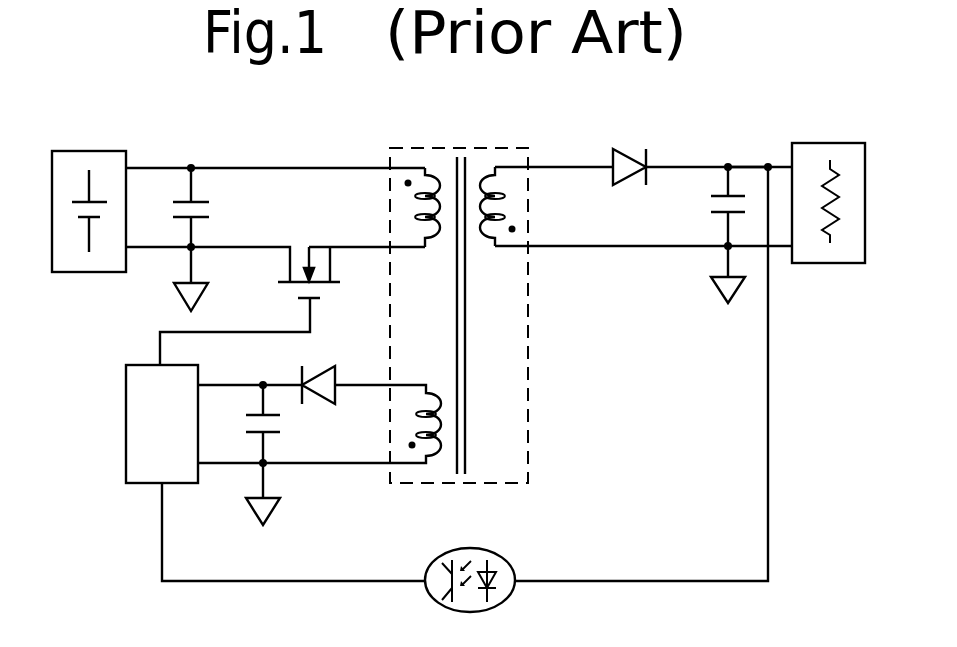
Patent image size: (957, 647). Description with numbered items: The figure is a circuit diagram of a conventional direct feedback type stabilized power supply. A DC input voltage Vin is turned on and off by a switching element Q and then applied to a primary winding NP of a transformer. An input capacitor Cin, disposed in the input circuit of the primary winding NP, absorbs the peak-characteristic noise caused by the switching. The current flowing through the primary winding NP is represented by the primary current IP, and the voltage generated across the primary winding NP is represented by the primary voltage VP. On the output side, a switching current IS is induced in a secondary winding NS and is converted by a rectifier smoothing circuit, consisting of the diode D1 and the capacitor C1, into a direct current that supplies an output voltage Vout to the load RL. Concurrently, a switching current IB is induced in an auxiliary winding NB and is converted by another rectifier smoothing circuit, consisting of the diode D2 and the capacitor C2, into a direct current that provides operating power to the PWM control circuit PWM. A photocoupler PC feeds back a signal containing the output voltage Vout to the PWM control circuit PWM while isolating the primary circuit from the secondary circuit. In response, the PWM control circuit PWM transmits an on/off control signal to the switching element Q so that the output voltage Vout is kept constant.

The DC input voltage Vin is at (84, 162).
The input capacitor Cin is at (214, 239).
The switching element Q is at (266, 306).
The primary winding current IP is at (354, 153).
The primary winding voltage VP is at (381, 186).
The primary winding NP is at (423, 227).
The secondary winding NS is at (497, 227).
The auxiliary winding NB is at (320, 402).
The switching current IS is at (586, 152).
The diode D1 is at (622, 186).
The output voltage Vout is at (743, 147).
The capacitor C1 is at (710, 235).
The load RL is at (821, 152).
The PWM control circuit PWM is at (214, 424).
The diode D2 is at (337, 401).
The capacitor C2 is at (284, 455).
The switching current IB is at (383, 368).
The photocoupler PC is at (502, 556).